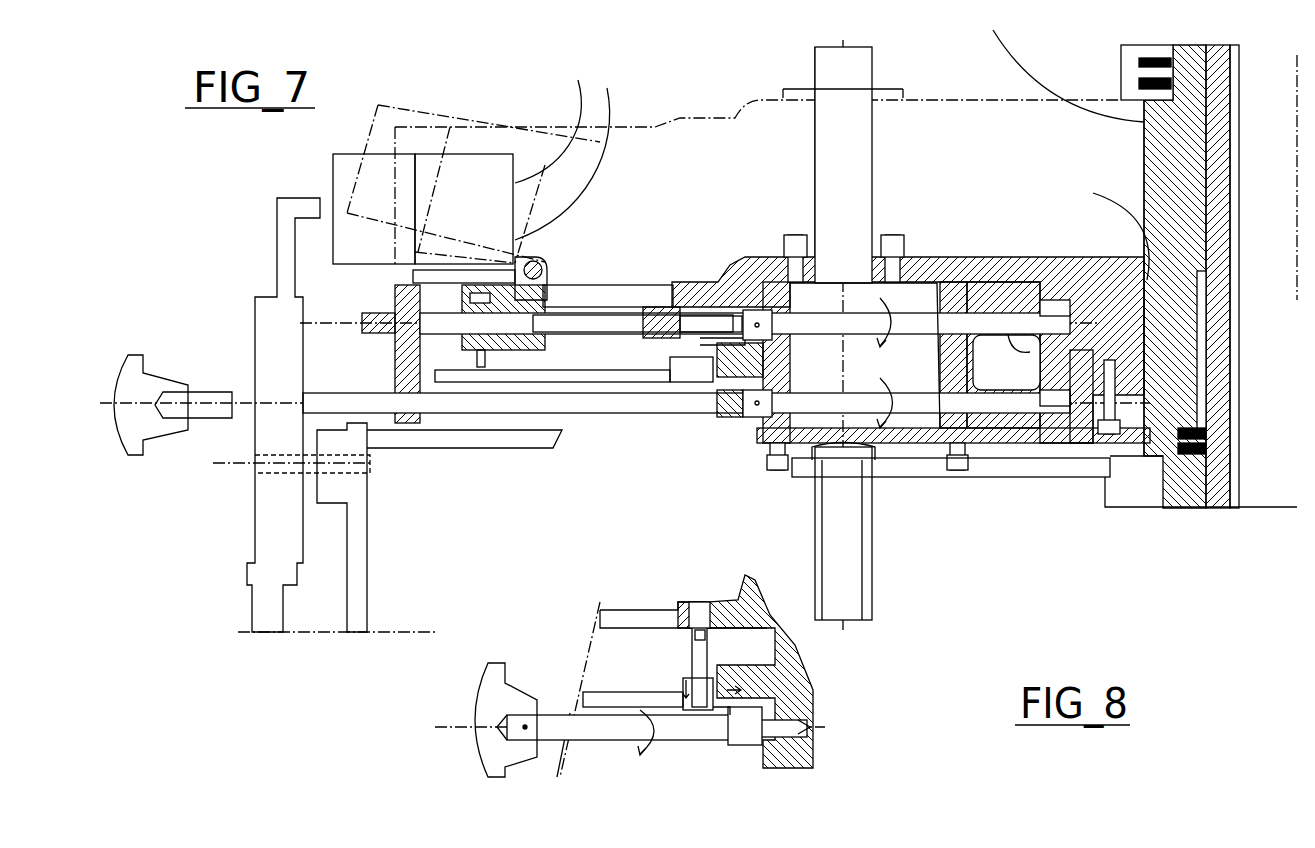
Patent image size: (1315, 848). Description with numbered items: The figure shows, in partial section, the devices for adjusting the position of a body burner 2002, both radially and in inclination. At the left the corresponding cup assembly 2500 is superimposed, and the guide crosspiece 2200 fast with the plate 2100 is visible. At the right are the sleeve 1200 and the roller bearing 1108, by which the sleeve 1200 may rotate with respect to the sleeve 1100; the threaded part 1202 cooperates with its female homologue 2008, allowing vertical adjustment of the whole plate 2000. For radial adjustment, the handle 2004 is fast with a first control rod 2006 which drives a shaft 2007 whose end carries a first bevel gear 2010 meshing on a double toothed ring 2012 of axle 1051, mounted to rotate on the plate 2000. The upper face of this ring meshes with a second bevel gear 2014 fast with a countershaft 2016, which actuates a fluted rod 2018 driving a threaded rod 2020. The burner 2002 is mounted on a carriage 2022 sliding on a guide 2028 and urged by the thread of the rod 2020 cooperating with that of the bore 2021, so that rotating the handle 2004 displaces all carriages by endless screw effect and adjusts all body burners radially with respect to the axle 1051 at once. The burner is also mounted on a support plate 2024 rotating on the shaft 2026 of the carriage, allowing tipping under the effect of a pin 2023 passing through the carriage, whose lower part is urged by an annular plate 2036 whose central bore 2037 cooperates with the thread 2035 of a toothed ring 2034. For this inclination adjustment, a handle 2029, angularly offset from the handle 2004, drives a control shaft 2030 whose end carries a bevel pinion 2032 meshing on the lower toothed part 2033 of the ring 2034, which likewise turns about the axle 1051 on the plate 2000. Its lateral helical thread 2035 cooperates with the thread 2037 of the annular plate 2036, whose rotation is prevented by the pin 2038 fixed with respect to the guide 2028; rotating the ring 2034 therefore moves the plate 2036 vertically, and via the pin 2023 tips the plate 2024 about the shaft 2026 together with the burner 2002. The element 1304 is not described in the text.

In FIG. 7, the body burner 2002 is at (345, 152).
In FIG. 7, the handle 2004 is at (122, 417).
In FIG. 7, the first control rod 2006 is at (608, 408).
In FIG. 7, the shaft 2007 is at (912, 410).
In FIG. 7, the female homologue 2008 is at (870, 152).
In FIG. 7, the first bevel gear 2010 is at (1070, 442).
In FIG. 7, the double toothed ring 2012 is at (1200, 352).
In FIG. 7, the second bevel gear 2014 is at (1053, 330).
In FIG. 7, the countershaft 2016 is at (893, 260).
In FIG. 7, the fluted rod 2018 is at (705, 318).
In FIG. 7, the threaded rod 2020 is at (545, 300).
In FIG. 7, the bore 2021 is at (473, 297).
In FIG. 7, the carriage 2022 is at (410, 347).
In FIG. 7, the pin 2023 is at (480, 368).
In FIG. 7, the support plate 2024 is at (420, 277).
In FIG. 7, the shaft of the carriage 2026 is at (548, 264).
In FIG. 7, the guide 2028 is at (613, 284).
In FIG. 8, the guide 2028 is at (647, 608).
In FIG. 8, the handle 2029 is at (478, 726).
In FIG. 8, the control shaft 2030 is at (552, 743).
In FIG. 8, the bevel pinion 2032 is at (743, 747).
In FIG. 8, the lower toothed part 2033 is at (808, 727).
In FIG. 7, the toothed ring 2034 is at (760, 385).
In FIG. 8, the toothed ring 2034 is at (800, 668).
In FIG. 7, the helical thread 2035 is at (718, 372).
In FIG. 8, the helical thread 2035 is at (717, 713).
In FIG. 7, the annular plate 2036 is at (680, 372).
In FIG. 8, the annular plate 2036 is at (597, 690).
In FIG. 7, the thread of the annular plate 2037 is at (705, 342).
In FIG. 8, the pin 2038 is at (697, 687).
In FIG. 7, the plate 2100 is at (523, 447).
In FIG. 7, the guide crosspiece 2200 is at (862, 70).
In FIG. 7, the cup assembly 2500 is at (236, 495).
In FIG. 7, the axle 1051 is at (1297, 70).
In FIG. 7, the sleeve 1100 is at (1222, 287).
In FIG. 7, the roller bearing 1108 is at (1188, 456).
In FIG. 7, the sleeve 1200 is at (1190, 170).
In FIG. 7, the threaded part 1202 is at (1147, 182).
In FIG. 7, the bearing block 1304 is at (1121, 48).
In FIG. 7, the plate 2000 is at (758, 145).